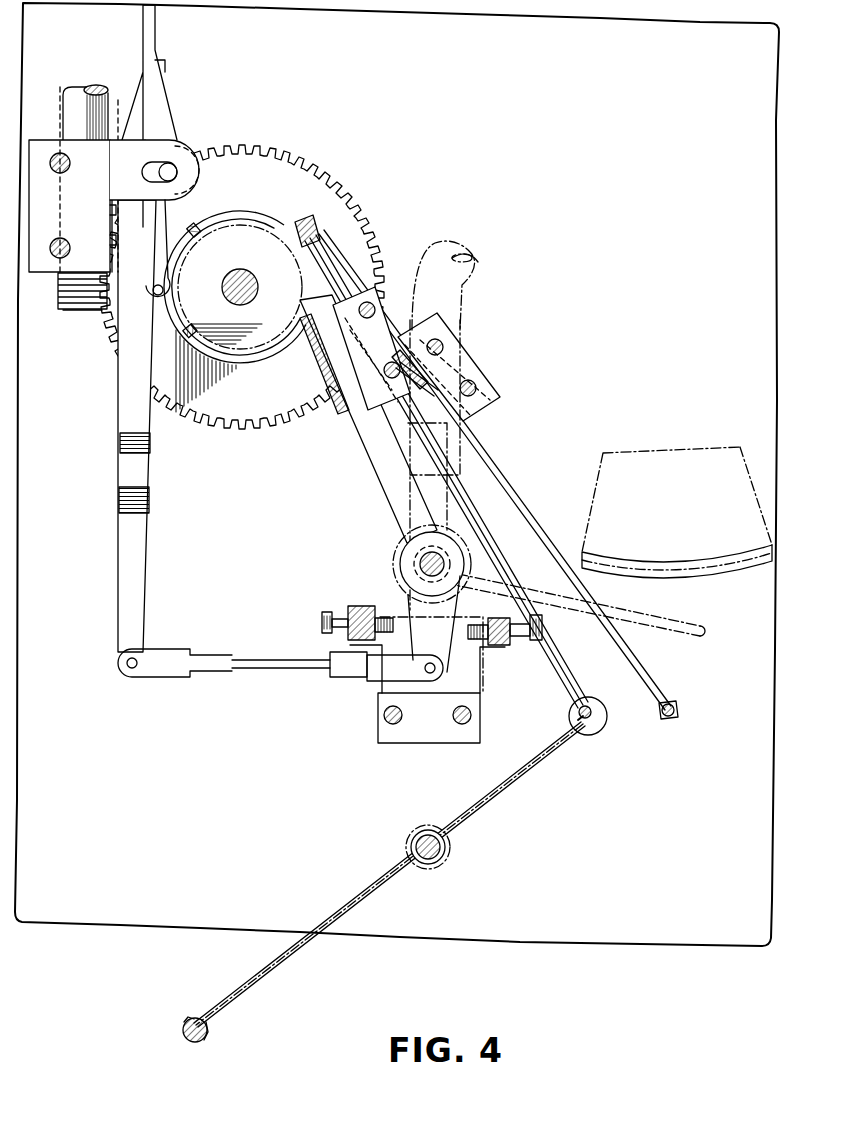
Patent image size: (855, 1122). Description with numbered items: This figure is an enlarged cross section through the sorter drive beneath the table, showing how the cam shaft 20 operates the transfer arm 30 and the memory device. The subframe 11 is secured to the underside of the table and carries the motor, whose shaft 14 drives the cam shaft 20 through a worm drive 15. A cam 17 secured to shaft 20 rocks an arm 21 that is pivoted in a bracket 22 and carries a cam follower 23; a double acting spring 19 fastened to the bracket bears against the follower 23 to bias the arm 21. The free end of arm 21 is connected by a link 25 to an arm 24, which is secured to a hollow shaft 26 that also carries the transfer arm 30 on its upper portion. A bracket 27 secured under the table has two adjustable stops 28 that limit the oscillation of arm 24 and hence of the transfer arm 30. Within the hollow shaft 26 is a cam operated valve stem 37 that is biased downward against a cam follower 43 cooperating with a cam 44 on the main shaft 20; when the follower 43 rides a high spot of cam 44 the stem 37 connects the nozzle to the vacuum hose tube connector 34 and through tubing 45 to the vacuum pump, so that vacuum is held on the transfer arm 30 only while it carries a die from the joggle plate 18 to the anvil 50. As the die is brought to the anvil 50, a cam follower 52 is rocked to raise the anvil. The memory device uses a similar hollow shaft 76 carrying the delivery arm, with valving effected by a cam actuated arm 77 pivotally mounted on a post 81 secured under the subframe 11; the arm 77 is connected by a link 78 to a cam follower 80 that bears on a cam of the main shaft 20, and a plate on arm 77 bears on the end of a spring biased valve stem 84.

The subframe 11 is at (585, 190).
The shaft 14 is at (75, 108).
The worm drive 15 is at (95, 325).
The cam 17 is at (276, 328).
The joggle plate 18 is at (665, 478).
The double acting spring 19 is at (122, 142).
The cam shaft 20 is at (241, 269).
The arm 21 is at (118, 489).
The bracket 22 is at (172, 156).
The cam follower 23 is at (152, 305).
The arm 24 is at (425, 612).
The link 25 is at (280, 670).
The hollow shaft 26 is at (420, 557).
The bracket 27 is at (367, 612).
The adjustable stops 28 is at (322, 625).
The transfer arm 30 is at (623, 613).
The vacuum hose tube connector 34 is at (432, 490).
The valve stem 37 is at (425, 571).
The cam follower 43 is at (376, 466).
The cam 44 is at (222, 213).
The tubing 45 is at (447, 300).
The anvil 50 is at (668, 724).
The cam follower 52 is at (655, 690).
The hollow shaft 76 is at (432, 860).
The cam actuated arm 77 is at (273, 972).
The link 78 is at (598, 716).
The cam follower 80 is at (568, 690).
The post 81 is at (183, 1027).
The valve stem 84 is at (412, 838).